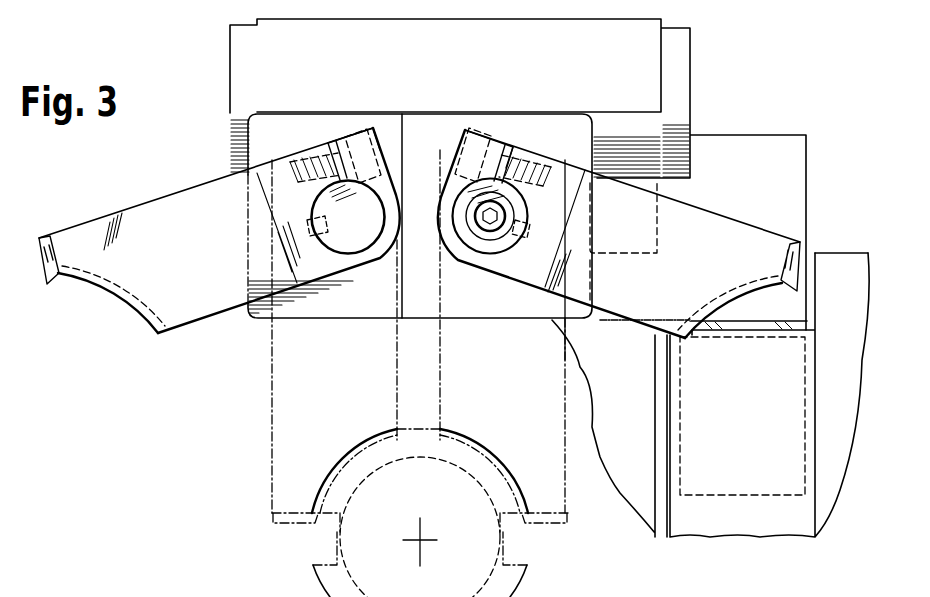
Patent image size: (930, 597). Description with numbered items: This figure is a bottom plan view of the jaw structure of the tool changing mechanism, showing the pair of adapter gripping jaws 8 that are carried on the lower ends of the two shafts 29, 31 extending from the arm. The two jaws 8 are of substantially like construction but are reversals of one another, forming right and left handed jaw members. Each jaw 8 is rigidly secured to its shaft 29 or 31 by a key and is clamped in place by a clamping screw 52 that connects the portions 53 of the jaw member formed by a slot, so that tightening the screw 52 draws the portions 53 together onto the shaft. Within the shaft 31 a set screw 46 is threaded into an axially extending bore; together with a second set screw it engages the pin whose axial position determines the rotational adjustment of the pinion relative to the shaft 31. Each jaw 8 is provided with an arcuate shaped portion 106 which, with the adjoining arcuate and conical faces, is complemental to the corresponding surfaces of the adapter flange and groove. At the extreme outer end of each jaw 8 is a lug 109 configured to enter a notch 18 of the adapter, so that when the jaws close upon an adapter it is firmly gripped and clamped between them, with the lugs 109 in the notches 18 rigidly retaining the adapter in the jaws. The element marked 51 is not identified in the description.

The adapter gripping jaw 8 is at (710, 214).
The notch 18 is at (510, 535).
The shaft 29 is at (367, 235).
The shaft 31 is at (468, 202).
The set screw 46 is at (488, 223).
The nut 51 is at (524, 238).
The clamping screw 52 is at (493, 140).
The portions of jaw member 53 is at (527, 148).
The arcuate shaped portion 106 is at (113, 293).
The lug 109 is at (788, 277).